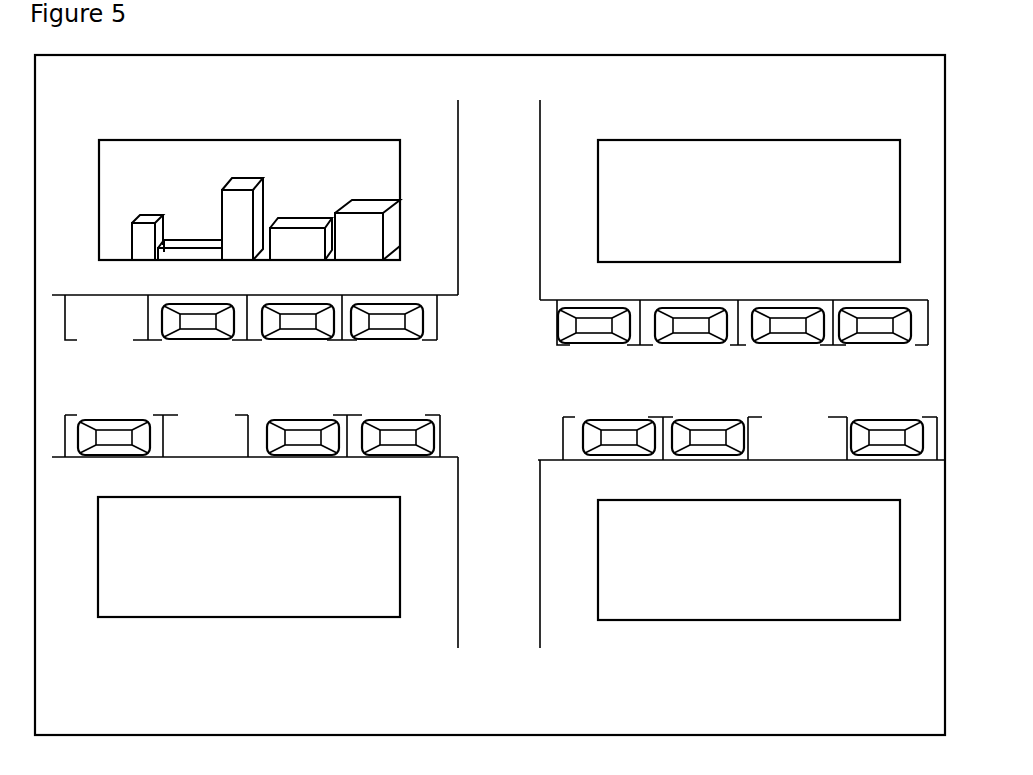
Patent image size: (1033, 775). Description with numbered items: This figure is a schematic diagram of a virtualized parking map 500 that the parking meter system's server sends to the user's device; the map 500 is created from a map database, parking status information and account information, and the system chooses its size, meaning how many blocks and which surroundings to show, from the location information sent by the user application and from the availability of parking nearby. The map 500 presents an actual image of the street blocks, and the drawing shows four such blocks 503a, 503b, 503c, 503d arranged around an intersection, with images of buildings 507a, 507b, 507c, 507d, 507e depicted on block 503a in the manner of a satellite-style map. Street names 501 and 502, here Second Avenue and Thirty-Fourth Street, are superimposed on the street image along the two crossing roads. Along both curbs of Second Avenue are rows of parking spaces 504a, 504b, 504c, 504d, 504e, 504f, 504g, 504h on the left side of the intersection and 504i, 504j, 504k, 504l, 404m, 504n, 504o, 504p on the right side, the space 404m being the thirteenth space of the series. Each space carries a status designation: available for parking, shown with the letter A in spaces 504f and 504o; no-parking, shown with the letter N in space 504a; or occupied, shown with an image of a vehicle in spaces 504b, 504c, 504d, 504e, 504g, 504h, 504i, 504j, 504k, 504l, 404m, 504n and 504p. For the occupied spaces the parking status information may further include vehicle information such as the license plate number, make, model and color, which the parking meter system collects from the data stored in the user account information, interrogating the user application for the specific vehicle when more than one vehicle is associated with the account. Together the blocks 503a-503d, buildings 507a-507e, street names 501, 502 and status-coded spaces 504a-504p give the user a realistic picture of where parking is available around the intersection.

The virtualized map 500 is at (847, 55).
The street name 501 is at (77, 390).
The street name 502 is at (527, 615).
The city block 503a is at (193, 140).
The city block 503b is at (690, 140).
The city block 503c is at (208, 618).
The city block 503d is at (697, 620).
The parking space 504a is at (80, 343).
The parking space 504b is at (167, 343).
The parking space 504c is at (267, 342).
The parking space 504d is at (348, 347).
The parking space 504e is at (143, 420).
The parking space 504f is at (241, 414).
The parking space 504g is at (347, 414).
The parking space 504h is at (430, 414).
The parking space 504i is at (573, 345).
The parking space 504j is at (725, 346).
The parking space 504k is at (813, 344).
The parking space 504l is at (896, 344).
The parking space 404m is at (597, 420).
The parking space 504n is at (712, 420).
The parking space 504o is at (830, 417).
The parking space 504p is at (925, 417).
The building structure 507a is at (145, 216).
The building structure 507b is at (182, 238).
The building structure 507c is at (232, 186).
The building structure 507d is at (300, 228).
The building structure 507e is at (377, 202).